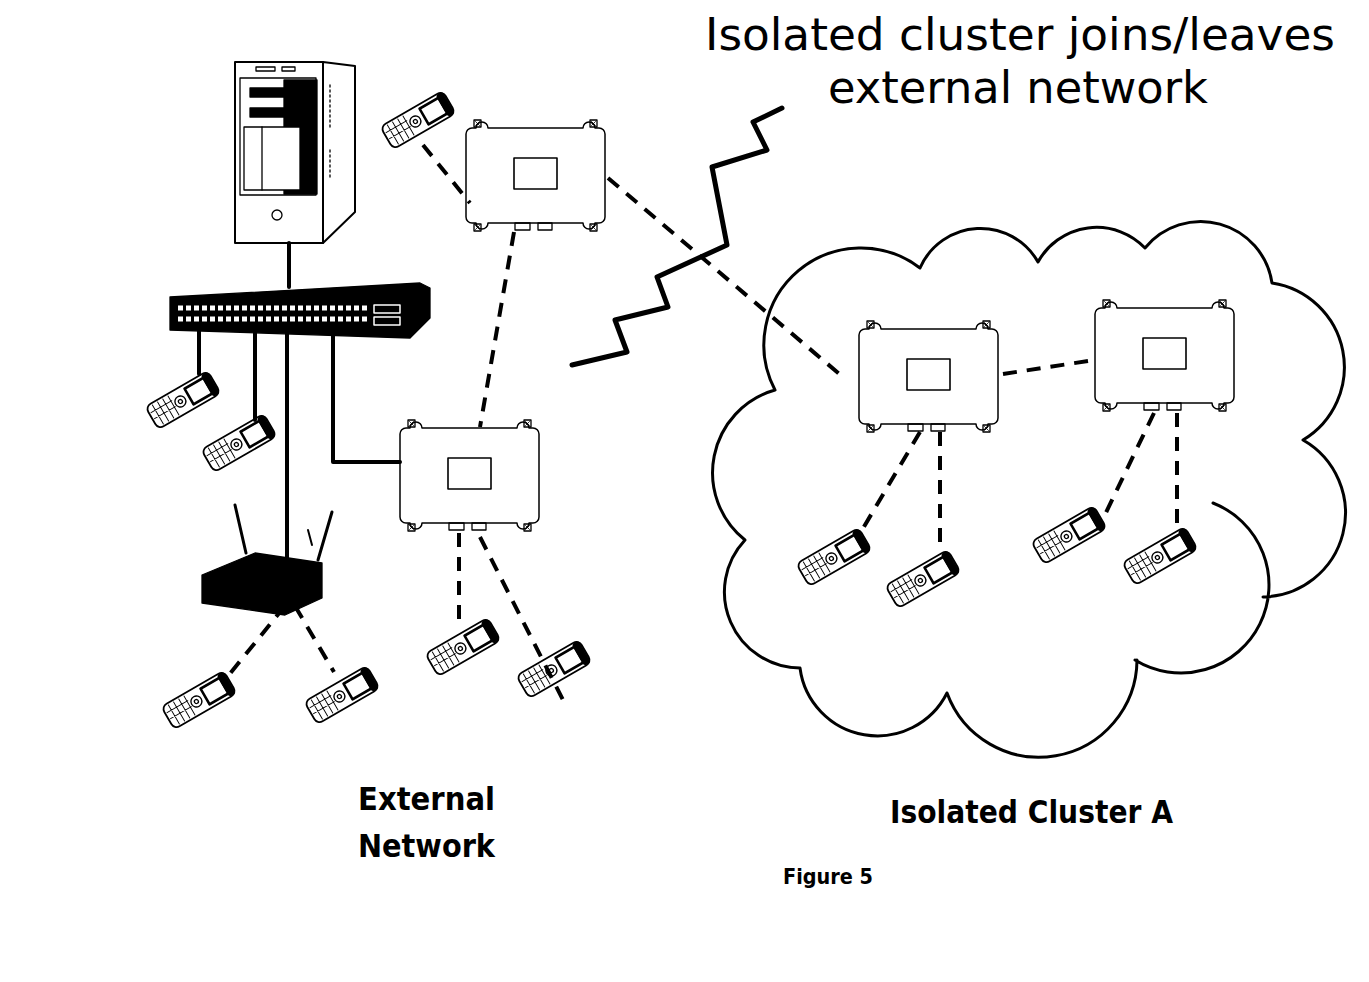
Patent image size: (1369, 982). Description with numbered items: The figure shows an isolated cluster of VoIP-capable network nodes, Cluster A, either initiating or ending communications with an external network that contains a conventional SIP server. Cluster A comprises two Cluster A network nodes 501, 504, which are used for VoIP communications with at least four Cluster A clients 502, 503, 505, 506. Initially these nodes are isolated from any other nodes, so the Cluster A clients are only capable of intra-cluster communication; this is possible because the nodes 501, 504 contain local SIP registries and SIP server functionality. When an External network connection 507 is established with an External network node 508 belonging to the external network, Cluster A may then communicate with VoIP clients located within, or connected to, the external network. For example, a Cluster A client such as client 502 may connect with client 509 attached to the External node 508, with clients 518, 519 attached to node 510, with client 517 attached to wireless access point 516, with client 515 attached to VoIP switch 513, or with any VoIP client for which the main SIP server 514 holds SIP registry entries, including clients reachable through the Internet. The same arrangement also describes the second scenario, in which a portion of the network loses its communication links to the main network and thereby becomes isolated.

The Cluster A network node 501 is at (900, 310).
The Cluster A client 502 is at (838, 533).
The Cluster A client 503 is at (930, 605).
The Cluster A network node 504 is at (1147, 297).
The Cluster A client 505 is at (1063, 560).
The Cluster A client 506 is at (1165, 577).
The External network connection 507 is at (675, 210).
The External network node 508 is at (528, 120).
The client 509 is at (397, 115).
The node 510 is at (553, 465).
The VoIP switch 513 is at (217, 278).
The main SIP server 514 is at (222, 72).
The client 515 is at (160, 425).
The wireless access point 516 is at (200, 607).
The client 517 is at (208, 718).
The client 518 is at (438, 637).
The client 519 is at (565, 700).